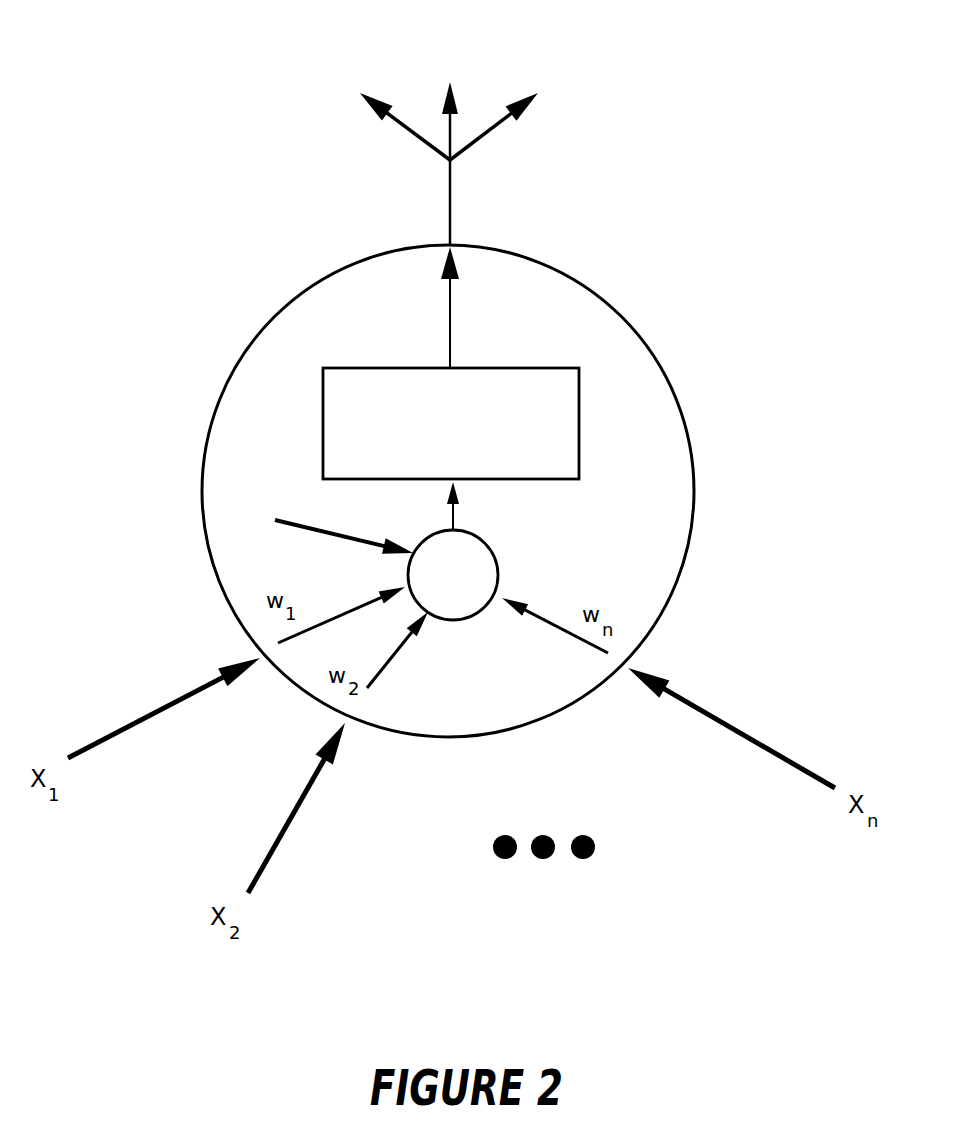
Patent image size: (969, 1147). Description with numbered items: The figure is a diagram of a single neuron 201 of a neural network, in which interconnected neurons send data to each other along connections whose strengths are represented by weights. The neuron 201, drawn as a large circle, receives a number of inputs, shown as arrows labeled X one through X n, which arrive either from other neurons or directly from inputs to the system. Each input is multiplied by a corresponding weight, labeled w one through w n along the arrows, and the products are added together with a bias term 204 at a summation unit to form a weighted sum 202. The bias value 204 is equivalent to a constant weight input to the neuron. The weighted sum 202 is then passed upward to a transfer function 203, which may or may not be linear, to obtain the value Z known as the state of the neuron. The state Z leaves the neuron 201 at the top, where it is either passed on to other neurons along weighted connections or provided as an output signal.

The neuron 201 is at (695, 498).
The weighted sum 202 is at (498, 568).
The transfer function 203 is at (451, 423).
The bias term 204 is at (336, 544).